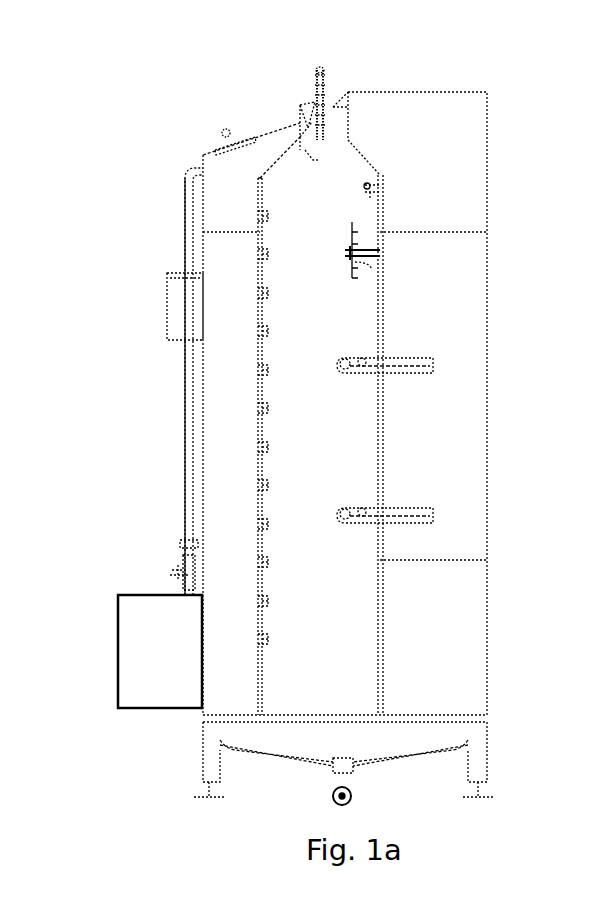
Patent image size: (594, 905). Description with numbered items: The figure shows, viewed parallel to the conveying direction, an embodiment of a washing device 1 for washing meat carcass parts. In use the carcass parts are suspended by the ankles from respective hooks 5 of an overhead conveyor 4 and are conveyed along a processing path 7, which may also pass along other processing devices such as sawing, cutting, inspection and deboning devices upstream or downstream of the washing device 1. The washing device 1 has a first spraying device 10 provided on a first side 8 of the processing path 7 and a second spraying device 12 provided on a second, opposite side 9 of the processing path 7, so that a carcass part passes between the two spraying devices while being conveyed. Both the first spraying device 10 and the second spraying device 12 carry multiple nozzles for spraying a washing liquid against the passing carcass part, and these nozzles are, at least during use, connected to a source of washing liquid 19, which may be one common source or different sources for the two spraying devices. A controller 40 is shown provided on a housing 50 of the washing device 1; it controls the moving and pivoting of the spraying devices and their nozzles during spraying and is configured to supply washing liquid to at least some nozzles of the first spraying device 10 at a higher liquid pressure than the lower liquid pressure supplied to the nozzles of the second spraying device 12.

The washing device 1 is at (106, 158).
The overhead conveyor 4 is at (296, 72).
The hook 5 is at (320, 150).
The processing path 7 is at (333, 796).
The first side 8 is at (538, 791).
The second side 9 is at (128, 786).
The first spraying device 10 is at (322, 203).
The second spraying device 12 is at (300, 441).
The source of washing liquid 19 is at (160, 651).
The controller 40 is at (175, 322).
The housing 50 is at (470, 210).